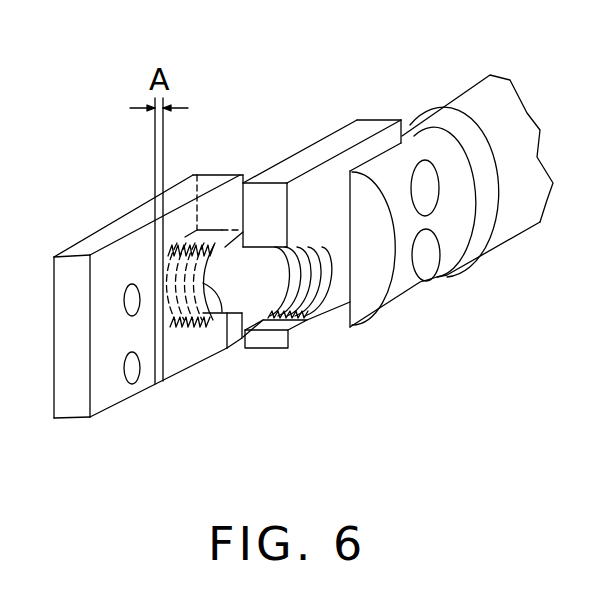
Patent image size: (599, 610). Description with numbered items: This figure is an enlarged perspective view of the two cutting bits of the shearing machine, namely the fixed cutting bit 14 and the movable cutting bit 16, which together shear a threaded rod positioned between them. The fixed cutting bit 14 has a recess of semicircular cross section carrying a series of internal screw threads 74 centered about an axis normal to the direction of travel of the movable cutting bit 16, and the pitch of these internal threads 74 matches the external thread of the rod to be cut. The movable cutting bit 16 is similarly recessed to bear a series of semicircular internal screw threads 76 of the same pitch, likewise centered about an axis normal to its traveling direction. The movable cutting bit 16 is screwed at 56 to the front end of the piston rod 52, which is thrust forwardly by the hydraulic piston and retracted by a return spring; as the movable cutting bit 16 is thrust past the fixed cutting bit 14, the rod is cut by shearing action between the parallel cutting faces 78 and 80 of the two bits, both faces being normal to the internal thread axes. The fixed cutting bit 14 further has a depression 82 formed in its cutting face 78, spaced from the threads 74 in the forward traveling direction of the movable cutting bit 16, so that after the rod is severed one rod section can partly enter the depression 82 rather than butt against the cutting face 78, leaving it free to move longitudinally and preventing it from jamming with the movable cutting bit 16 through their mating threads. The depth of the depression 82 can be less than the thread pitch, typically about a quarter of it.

The fixed cutting bit 14 is at (111, 211).
The movable cutting bit 16 is at (363, 116).
The piston rod 52 is at (505, 212).
The screw connection 56 is at (427, 175).
The internal screw threads 74 is at (227, 352).
The internal screw threads 76 is at (313, 323).
The cutting face 78 is at (220, 205).
The cutting face 80 is at (278, 163).
The depression 82 is at (141, 343).